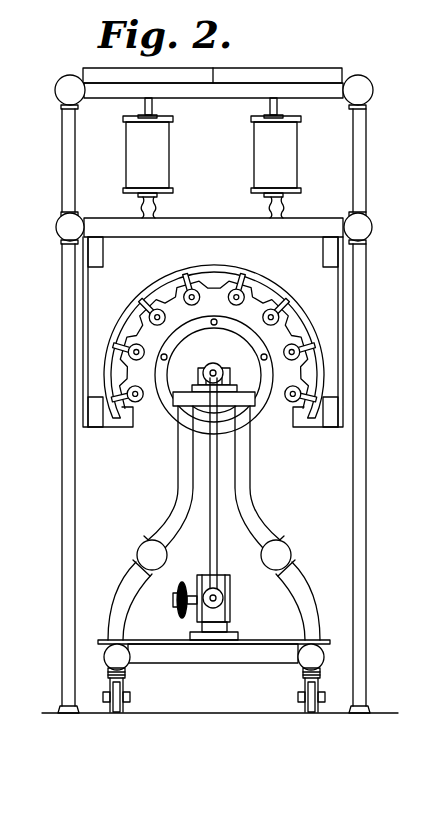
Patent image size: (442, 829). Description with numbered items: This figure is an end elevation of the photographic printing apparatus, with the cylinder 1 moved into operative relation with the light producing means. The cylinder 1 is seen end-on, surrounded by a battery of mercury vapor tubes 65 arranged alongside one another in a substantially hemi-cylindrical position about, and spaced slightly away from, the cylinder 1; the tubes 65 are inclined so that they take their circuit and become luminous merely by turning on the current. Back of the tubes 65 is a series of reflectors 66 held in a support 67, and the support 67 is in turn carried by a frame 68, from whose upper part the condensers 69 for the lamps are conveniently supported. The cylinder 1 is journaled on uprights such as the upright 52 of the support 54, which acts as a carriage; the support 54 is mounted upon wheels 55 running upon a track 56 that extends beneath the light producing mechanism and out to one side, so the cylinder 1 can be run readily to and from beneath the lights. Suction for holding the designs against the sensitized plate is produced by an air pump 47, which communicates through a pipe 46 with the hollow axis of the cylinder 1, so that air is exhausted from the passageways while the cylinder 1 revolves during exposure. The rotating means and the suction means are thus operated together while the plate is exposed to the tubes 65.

The cylinder 1 is at (165, 412).
The pipe 46 is at (237, 551).
The air pump 47 is at (235, 612).
The upright 52 is at (247, 473).
The support 54 is at (205, 657).
The wheels 55 is at (112, 703).
The track 56 is at (122, 713).
The mercury vapor tubes 65 is at (150, 317).
The reflectors 66 is at (152, 302).
The support 67 is at (322, 280).
The frame 68 is at (360, 498).
The condensers 69 is at (254, 142).